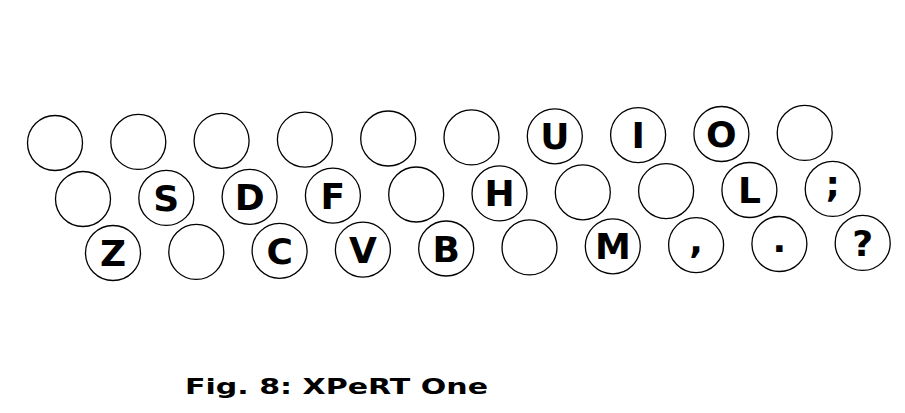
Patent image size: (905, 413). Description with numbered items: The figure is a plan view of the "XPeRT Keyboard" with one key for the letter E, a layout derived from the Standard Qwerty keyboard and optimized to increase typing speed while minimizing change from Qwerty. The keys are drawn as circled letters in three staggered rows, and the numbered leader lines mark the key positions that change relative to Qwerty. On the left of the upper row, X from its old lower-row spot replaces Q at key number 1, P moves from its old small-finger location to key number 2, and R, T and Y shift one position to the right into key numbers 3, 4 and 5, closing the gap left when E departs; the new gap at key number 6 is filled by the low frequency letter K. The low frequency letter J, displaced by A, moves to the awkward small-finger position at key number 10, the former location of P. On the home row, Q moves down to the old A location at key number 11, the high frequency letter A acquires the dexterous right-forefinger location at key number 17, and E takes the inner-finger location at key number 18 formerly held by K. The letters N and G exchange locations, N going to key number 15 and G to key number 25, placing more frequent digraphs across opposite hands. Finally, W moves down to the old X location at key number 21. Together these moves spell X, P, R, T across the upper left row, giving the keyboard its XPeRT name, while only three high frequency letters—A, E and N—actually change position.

The key number [1] location 1 is at (53, 116).
The key number [2] location 2 is at (138, 114).
The key number [3] location 3 is at (233, 116).
The key number [4] location 4 is at (316, 114).
The key number [5] location 5 is at (385, 111).
The key number [6] location 6 is at (470, 110).
The key number [10] location 10 is at (802, 106).
The key number [11] location 11 is at (97, 175).
The key number [15] location 15 is at (427, 169).
The key number [17] location 17 is at (594, 167).
The key number [18] location 18 is at (678, 166).
The key number [21] location 21 is at (197, 279).
The key number [25] location 25 is at (530, 275).